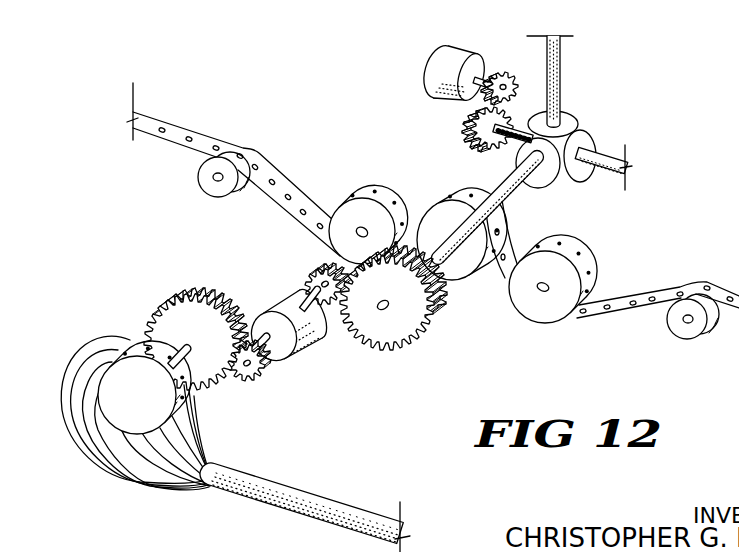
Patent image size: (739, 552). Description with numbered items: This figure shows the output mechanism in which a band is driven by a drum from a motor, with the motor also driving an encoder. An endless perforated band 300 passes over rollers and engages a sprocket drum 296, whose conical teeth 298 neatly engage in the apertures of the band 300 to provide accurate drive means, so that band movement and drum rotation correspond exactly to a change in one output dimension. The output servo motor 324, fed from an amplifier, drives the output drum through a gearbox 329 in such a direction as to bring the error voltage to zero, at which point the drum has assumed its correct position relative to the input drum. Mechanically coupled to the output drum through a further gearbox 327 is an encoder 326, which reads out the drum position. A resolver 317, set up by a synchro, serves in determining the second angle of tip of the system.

The sprocket drum 296 is at (436, 216).
The teeth 298 is at (356, 182).
The perforated band 300 is at (668, 294).
The resolver 317 is at (591, 95).
The output servo motor 324 is at (272, 313).
The encoder 326 is at (157, 407).
The gearbox 327 is at (163, 320).
The gearbox 329 is at (392, 338).